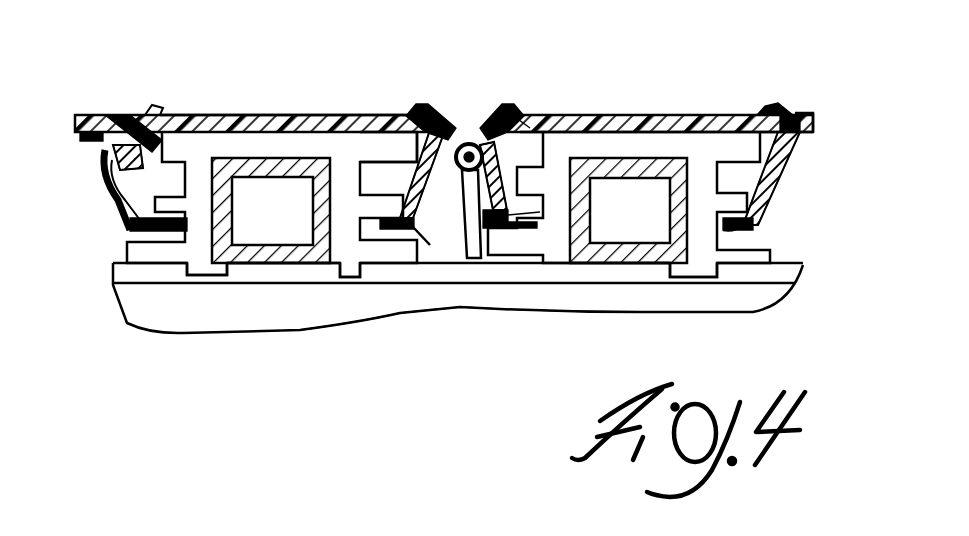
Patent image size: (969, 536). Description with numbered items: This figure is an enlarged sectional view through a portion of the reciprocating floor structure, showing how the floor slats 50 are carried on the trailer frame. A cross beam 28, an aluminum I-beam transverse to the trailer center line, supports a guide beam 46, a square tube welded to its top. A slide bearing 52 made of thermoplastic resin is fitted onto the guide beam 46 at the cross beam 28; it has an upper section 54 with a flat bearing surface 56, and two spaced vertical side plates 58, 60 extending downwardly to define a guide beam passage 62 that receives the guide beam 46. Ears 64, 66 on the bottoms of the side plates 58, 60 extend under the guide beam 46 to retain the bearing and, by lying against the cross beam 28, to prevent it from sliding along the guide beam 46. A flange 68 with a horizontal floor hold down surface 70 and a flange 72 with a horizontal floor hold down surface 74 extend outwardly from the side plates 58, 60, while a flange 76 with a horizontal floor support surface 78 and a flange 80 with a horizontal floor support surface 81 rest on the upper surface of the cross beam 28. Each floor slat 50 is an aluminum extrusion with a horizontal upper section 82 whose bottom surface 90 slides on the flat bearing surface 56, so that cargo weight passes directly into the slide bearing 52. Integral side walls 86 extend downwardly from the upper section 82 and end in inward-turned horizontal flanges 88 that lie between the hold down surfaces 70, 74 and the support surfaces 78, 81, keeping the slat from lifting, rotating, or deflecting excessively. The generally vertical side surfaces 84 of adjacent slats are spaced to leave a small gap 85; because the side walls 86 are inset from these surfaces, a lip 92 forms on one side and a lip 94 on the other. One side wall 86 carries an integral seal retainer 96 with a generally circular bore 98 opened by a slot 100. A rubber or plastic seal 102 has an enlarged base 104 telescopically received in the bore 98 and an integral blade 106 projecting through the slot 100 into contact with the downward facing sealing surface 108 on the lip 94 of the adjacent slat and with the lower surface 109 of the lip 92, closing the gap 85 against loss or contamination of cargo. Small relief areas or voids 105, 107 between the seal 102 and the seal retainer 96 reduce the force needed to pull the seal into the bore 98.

The cross beam 28 is at (177, 323).
The guide beam 46 is at (270, 257).
The floor slat 50 is at (607, 107).
The slide bearing 52 is at (628, 140).
The upper section 54 is at (318, 127).
The flat bearing surface 56 is at (588, 110).
The vertical side plate 58 is at (560, 262).
The vertical side plate 60 is at (340, 255).
The guide beam passage 62 is at (330, 193).
The ear 64 is at (223, 273).
The ear 66 is at (313, 268).
The flange 68 is at (170, 200).
The horizontal floor hold down surface 70 is at (140, 214).
The flange 72 is at (458, 168).
The horizontal floor hold down surface 74 is at (415, 231).
The flange 76 is at (133, 255).
The horizontal floor support surface 78 is at (137, 244).
The flange 80 is at (373, 268).
The horizontal floor support surface 81 is at (403, 268).
The horizontal upper section 82 is at (707, 122).
The vertical side surface 84 is at (443, 127).
The gap 85 is at (453, 98).
The side wall 86 is at (475, 215).
The horizontal flange 88 is at (187, 224).
The bottom surface 90 is at (743, 113).
The lip 92 is at (474, 127).
The lip 94 is at (800, 113).
The integral seal retainer 96 is at (497, 147).
The generally circular bore 98 is at (483, 150).
The slot 100 is at (420, 165).
The seal 102 is at (437, 140).
The enlarged base 104 is at (467, 185).
The relief area 105 is at (504, 127).
The blade 106 is at (440, 127).
The relief area 107 is at (490, 157).
The downward facing sealing surface 108 is at (800, 138).
The lower surface 109 is at (489, 127).